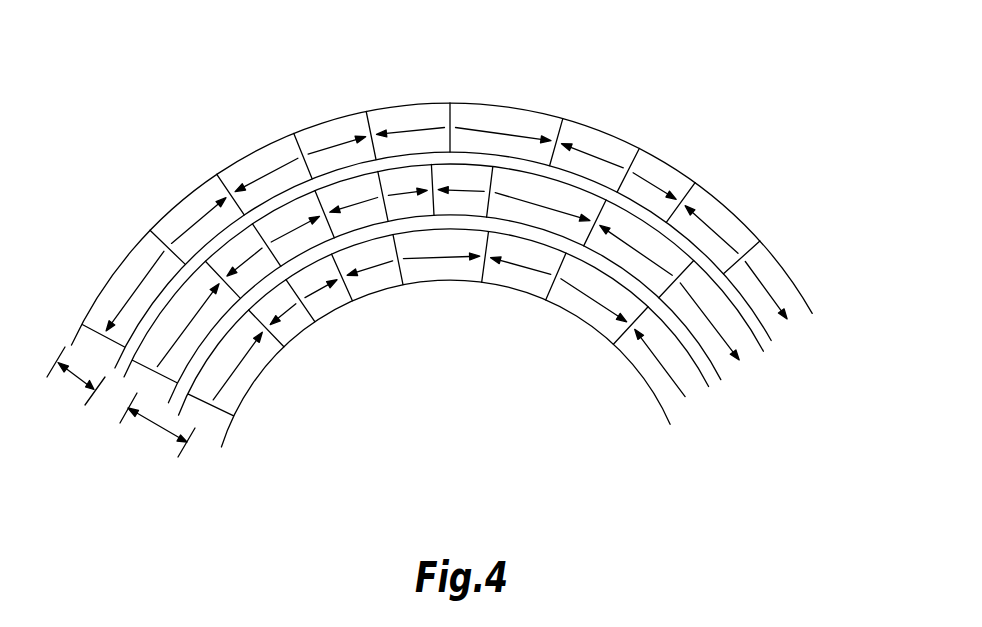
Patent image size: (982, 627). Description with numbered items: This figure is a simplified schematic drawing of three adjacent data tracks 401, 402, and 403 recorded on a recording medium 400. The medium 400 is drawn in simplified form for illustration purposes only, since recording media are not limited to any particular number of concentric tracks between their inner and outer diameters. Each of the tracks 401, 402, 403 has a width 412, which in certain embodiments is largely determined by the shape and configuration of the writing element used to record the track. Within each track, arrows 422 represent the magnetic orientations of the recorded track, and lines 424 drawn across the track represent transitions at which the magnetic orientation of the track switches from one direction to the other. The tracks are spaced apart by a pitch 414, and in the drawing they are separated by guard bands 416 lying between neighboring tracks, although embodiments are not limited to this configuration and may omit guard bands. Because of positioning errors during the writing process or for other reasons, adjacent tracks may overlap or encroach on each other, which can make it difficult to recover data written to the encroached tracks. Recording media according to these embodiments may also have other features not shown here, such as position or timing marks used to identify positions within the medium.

The recording medium 400 is at (650, 87).
The data track 401 is at (706, 202).
The data track 402 is at (712, 250).
The data track 403 is at (650, 327).
The track width 412 is at (77, 387).
The pitch 414 is at (160, 426).
The guard band 416 is at (553, 168).
The arrows representing magnetic orientations 422 is at (403, 130).
The transition lines 424 is at (147, 227).